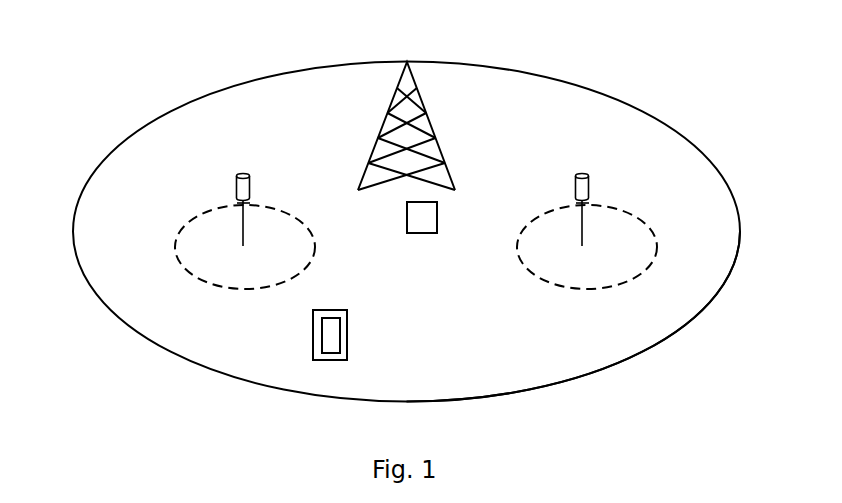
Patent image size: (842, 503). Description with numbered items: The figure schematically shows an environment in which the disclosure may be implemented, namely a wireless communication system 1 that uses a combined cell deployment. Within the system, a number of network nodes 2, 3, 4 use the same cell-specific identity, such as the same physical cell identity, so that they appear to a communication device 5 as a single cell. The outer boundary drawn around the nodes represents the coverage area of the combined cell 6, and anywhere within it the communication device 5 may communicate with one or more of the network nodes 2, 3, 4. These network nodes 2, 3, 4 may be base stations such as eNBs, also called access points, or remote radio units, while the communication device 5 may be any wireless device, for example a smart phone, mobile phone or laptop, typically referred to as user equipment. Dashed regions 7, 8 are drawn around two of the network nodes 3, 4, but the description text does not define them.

The wireless communication system 1 is at (623, 76).
The network node 2 is at (430, 218).
The network node 3 is at (250, 185).
The network node 4 is at (589, 185).
The communication device 5 is at (343, 352).
The combined cell 6 is at (625, 348).
The first local coverage area 7 is at (285, 263).
The second local coverage area 8 is at (625, 238).